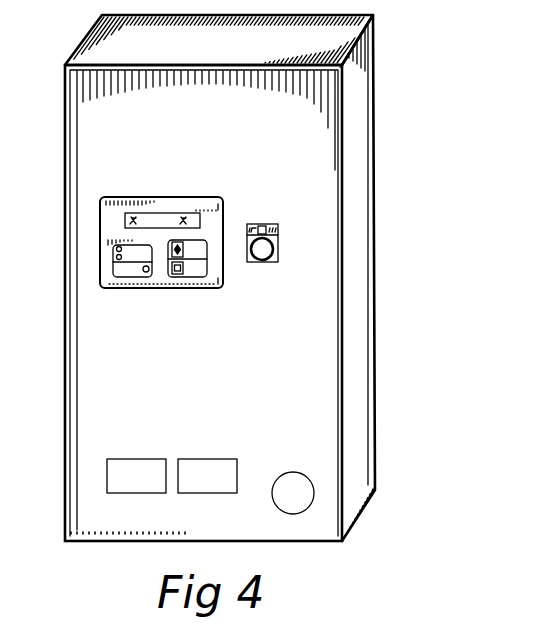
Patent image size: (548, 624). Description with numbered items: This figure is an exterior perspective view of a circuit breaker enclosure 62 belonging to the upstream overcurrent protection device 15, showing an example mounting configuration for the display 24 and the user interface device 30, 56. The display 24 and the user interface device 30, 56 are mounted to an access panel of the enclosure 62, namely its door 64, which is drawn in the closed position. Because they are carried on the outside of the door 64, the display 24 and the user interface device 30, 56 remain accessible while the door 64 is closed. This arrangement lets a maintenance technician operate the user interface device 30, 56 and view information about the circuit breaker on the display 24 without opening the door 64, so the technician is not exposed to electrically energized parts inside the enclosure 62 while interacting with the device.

The overcurrent protection device 15 is at (243, 316).
The display 24 is at (113, 288).
The user interface device 30 is at (352, 246).
The user interface device 56 is at (279, 248).
The circuit breaker enclosure 62 is at (376, 138).
The door 64 is at (268, 541).